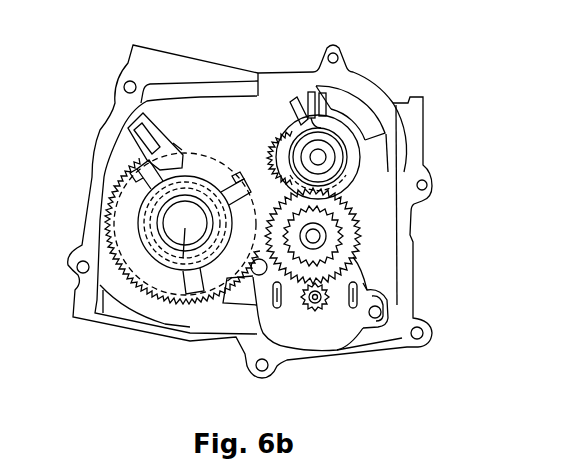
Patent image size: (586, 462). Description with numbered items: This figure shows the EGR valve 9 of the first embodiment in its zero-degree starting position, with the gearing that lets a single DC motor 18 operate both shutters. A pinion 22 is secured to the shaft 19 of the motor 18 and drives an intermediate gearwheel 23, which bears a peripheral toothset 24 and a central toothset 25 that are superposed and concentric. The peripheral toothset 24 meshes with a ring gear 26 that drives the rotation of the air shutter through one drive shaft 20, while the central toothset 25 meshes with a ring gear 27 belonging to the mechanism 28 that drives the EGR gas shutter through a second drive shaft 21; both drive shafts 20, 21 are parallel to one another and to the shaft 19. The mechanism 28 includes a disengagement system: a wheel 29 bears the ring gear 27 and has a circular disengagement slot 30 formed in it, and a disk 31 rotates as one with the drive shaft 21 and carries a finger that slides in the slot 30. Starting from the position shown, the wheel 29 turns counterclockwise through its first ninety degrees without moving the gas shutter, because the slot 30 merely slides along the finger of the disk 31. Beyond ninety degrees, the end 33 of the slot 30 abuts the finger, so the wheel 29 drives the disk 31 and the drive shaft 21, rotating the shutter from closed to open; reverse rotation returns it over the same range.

The EGR valve 9 is at (398, 55).
The motor 18 is at (330, 330).
The shaft of the motor 19 is at (318, 311).
The drive shaft 20 is at (183, 240).
The drive shaft 21 is at (320, 155).
The pinion 22 is at (333, 308).
The intermediate gearwheel 23 is at (368, 247).
The peripheral toothset 24 is at (370, 236).
The central toothset 25 is at (350, 254).
The ring gear 26 is at (187, 300).
The ring gear 27 is at (283, 103).
The mechanism for driving the EGR gas shutter 28 is at (336, 111).
The wheel 29 is at (307, 100).
The circular disengagement slot 30 is at (426, 180).
The disk 31 is at (340, 151).
The end of the slot 33 is at (272, 167).